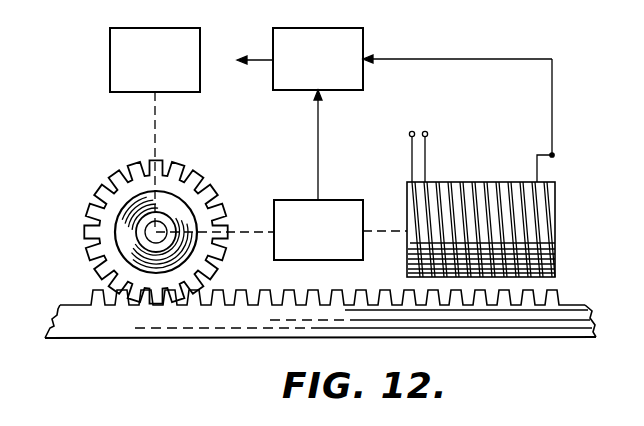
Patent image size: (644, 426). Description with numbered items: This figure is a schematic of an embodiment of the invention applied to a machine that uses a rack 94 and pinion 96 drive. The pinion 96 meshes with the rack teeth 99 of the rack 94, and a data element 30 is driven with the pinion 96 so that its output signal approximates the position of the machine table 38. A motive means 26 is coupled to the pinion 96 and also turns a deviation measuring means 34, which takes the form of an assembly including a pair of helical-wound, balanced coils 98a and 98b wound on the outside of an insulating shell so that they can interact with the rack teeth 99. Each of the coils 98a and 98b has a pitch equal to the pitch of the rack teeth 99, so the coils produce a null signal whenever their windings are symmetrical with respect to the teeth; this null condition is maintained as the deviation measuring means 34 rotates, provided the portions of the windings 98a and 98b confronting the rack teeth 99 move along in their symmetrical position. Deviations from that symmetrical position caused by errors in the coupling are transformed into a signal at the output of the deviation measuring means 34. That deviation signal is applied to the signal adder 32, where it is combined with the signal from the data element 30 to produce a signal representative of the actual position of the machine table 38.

The motive means 26 is at (110, 59).
The signal adder 32 is at (362, 35).
The data element 30 is at (298, 181).
The deviation measuring means 34 is at (556, 206).
The coil 98a is at (411, 160).
The coil 98b is at (428, 146).
The pinion 96 is at (206, 184).
The rack teeth 99 is at (358, 291).
The rack 94 is at (576, 300).
The table 38 is at (316, 341).